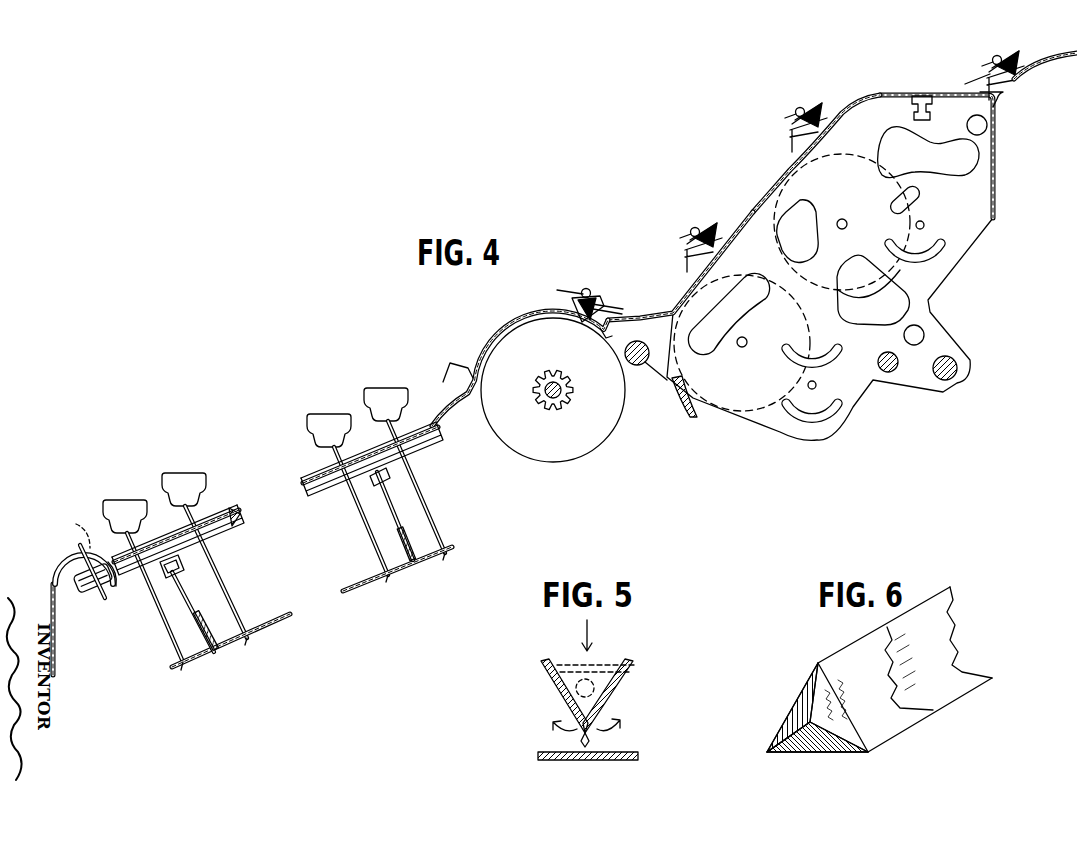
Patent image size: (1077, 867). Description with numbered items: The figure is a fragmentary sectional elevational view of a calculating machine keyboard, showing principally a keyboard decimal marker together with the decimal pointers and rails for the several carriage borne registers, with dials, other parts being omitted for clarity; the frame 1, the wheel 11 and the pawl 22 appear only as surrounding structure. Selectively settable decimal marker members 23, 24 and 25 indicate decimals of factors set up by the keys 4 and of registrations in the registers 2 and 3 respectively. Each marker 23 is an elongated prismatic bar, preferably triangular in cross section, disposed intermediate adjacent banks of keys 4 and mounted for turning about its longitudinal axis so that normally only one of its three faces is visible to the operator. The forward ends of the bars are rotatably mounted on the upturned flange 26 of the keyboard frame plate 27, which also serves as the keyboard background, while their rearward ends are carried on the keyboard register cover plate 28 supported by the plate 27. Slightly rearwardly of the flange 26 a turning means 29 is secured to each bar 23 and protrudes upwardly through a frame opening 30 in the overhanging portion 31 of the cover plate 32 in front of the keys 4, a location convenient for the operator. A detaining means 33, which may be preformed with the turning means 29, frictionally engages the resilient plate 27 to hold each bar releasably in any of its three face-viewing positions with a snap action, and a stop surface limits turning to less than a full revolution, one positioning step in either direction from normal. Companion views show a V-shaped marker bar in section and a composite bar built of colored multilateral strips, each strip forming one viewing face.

In FIG. 4, the frame plate 1 is at (882, 93).
In FIG. 4, the register 2 is at (793, 153).
In FIG. 4, the register 3 is at (695, 272).
In FIG. 4, the keys 4 is at (269, 504).
In FIG. 4, the drum wheel 11 is at (553, 390).
In FIG. 4, the pawl 22 is at (1022, 60).
In FIG. 4, the decimal marker bar 23 is at (225, 510).
In FIG. 6, the decimal marker bar 23 is at (903, 727).
In FIG. 4, the decimal marker member 24 is at (795, 125).
In FIG. 4, the decimal marker member 25 is at (700, 225).
In FIG. 4, the upturned flange 26 is at (57, 568).
In FIG. 4, the keyboard frame plate 27 is at (241, 516).
In FIG. 4, the keyboard register cover plate 28 is at (530, 318).
In FIG. 4, the turning means 29 is at (77, 552).
In FIG. 4, the frame openings 30 is at (71, 529).
In FIG. 4, the overhanging portion 31 is at (90, 559).
In FIG. 4, the cover plate 32 is at (1038, 64).
In FIG. 4, the detaining means 33 is at (112, 580).